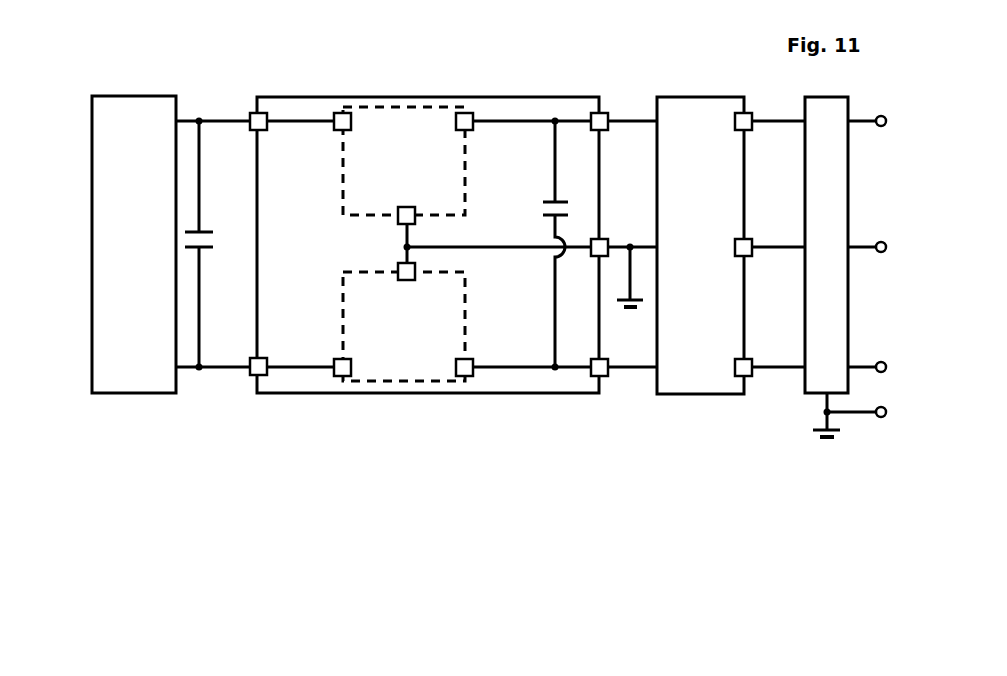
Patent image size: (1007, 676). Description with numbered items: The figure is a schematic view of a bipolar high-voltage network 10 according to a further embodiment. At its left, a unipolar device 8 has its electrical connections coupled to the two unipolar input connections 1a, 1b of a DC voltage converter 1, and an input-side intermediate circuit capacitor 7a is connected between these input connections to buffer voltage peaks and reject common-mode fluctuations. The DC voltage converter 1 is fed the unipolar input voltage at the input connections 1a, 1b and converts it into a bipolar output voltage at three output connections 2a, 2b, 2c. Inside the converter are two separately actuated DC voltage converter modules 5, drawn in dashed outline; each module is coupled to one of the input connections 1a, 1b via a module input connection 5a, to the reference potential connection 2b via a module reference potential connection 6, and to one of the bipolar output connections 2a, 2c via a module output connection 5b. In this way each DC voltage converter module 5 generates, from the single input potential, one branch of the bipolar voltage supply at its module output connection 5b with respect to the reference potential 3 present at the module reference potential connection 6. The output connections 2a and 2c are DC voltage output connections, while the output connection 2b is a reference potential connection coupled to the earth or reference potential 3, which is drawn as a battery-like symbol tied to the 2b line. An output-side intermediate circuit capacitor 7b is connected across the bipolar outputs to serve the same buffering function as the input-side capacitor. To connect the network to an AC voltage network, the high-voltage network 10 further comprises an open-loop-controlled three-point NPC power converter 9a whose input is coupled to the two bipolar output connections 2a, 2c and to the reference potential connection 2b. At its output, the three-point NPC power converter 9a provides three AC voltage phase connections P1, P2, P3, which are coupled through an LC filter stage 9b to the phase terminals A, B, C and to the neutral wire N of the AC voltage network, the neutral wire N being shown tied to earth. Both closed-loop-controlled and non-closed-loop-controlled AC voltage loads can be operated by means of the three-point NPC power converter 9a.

The bipolar high-voltage network 10 is at (104, 74).
The unipolar device 8 is at (92, 305).
The intermediate circuit capacitor 7a is at (205, 230).
The DC voltage converter 1 is at (511, 97).
The input connection 1a is at (250, 116).
The input connection 1b is at (250, 373).
The DC voltage converter module 5 is at (390, 107).
The module input connection 5a is at (335, 128).
The module output connection 5b is at (473, 127).
The module reference potential connection 6 is at (415, 219).
The intermediate circuit capacitor 7b is at (557, 201).
The DC voltage output connection 2a is at (608, 128).
The reference potential connection 2b is at (608, 243).
The DC voltage output connection 2c is at (608, 374).
The reference potential 3 is at (630, 312).
The three-point NPC power converter 9a is at (717, 395).
The AC voltage phase connection P1 is at (752, 128).
The AC voltage phase connection P2 is at (752, 243).
The AC voltage phase connection P3 is at (752, 374).
The LC filter stage 9b is at (848, 303).
The phase terminal A is at (886, 125).
The phase terminal B is at (886, 251).
The phase terminal C is at (886, 371).
The neutral wire N is at (886, 416).